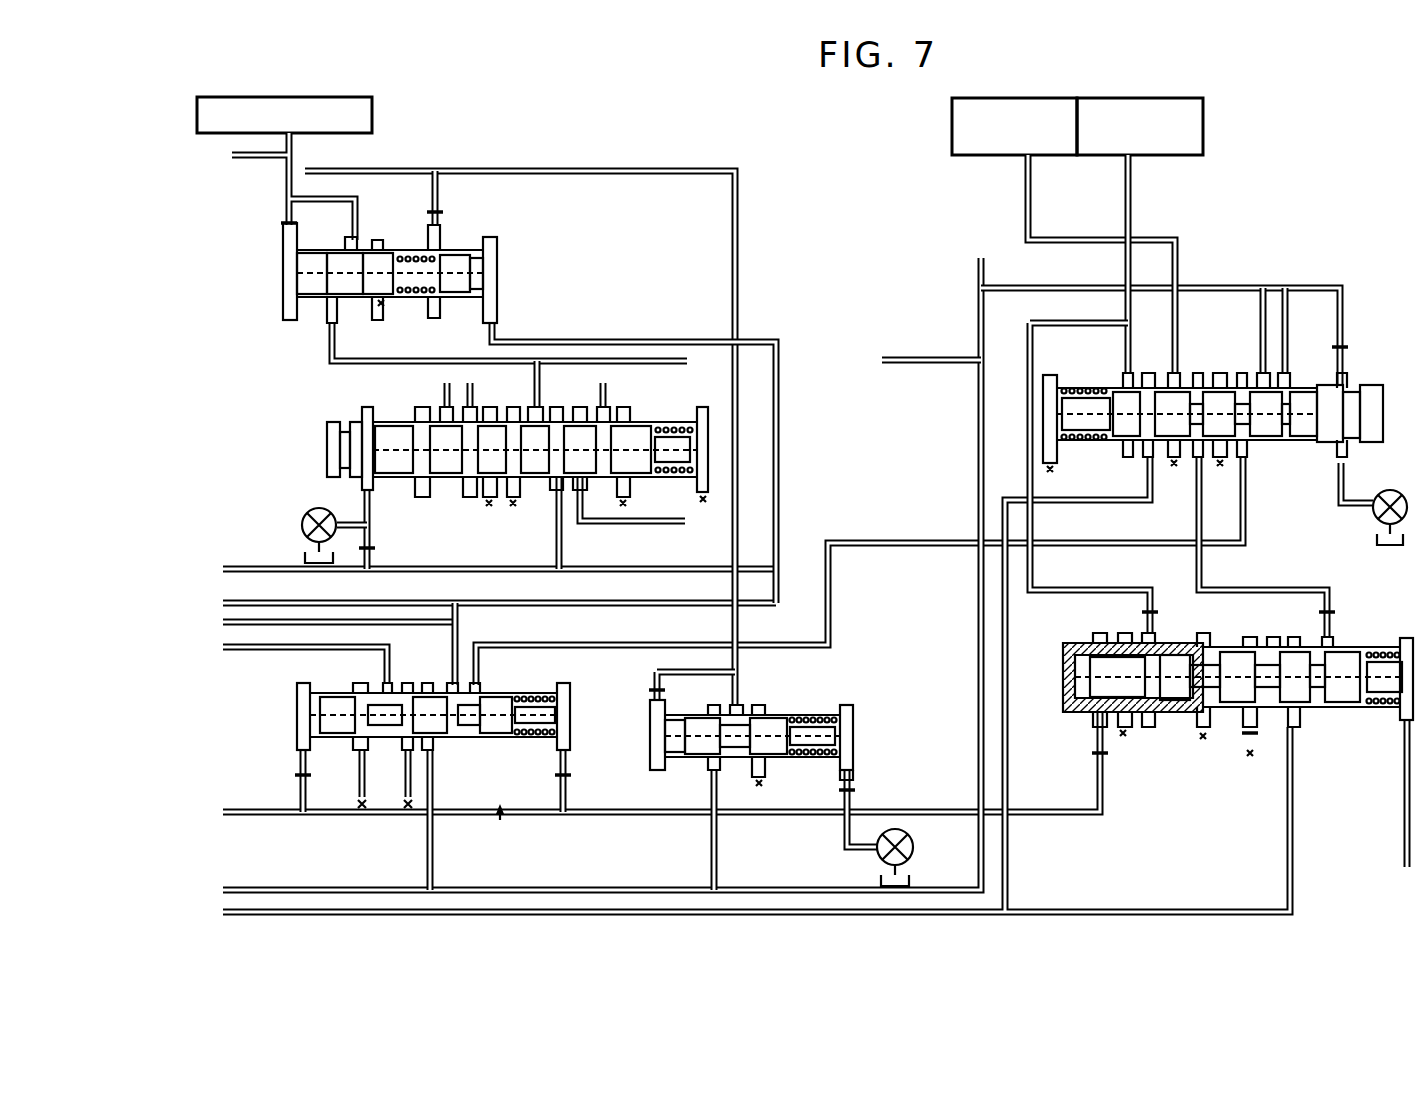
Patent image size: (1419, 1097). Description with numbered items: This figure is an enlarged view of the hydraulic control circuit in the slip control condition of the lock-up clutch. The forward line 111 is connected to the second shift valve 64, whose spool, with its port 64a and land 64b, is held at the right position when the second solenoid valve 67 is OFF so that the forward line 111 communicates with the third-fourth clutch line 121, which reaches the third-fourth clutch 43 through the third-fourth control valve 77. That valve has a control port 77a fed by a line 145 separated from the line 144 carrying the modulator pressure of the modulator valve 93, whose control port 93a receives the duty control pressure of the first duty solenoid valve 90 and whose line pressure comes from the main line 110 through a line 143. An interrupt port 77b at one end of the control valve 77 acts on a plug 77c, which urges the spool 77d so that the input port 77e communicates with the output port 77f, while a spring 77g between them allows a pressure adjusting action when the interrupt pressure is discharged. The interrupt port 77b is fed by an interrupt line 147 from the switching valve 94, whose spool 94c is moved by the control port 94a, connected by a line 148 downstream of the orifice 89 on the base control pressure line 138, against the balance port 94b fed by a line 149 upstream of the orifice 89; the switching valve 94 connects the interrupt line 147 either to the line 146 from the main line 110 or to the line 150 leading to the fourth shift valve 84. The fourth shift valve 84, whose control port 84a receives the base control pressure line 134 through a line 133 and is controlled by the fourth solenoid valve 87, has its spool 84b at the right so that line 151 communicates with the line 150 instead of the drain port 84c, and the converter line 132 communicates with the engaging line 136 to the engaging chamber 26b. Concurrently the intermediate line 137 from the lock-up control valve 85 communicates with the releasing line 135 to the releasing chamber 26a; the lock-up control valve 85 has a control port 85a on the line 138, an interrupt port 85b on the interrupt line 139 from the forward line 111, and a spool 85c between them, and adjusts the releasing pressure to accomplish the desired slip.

The 3-4 clutch 43 is at (372, 113).
The releasing chamber 26a is at (952, 137).
The engaging chamber 26b is at (1203, 132).
The 3-4 control valve 77 is at (395, 268).
The control port 77a is at (428, 235).
The interrupt port 77b is at (502, 312).
The plug 77c is at (492, 251).
The spool 77d is at (280, 250).
The input port 77e is at (326, 317).
The output port 77f is at (350, 242).
The spring 77g is at (402, 310).
The line 145 is at (438, 206).
The line 144 is at (738, 255).
The 3-4 clutch line 121 is at (333, 357).
The second shift valve 64 is at (527, 428).
The port of second shift valve 64a is at (375, 483).
The land of second shift valve 64b is at (413, 437).
The second solenoid valve 67 is at (302, 508).
The forward line 111 is at (556, 533).
The interrupt line 147 is at (800, 448).
The line 150 is at (568, 622).
The switching valve 94 is at (421, 726).
The control port 94a is at (568, 760).
The balance port 94b is at (294, 743).
The spool 94c is at (329, 691).
The line 149 is at (296, 793).
The line 148 is at (561, 791).
The line 146 is at (433, 858).
The orifice 89 is at (506, 821).
The main line 110 is at (602, 888).
The line 143 is at (710, 844).
The base control pressure line 138 is at (777, 814).
The modulator valve 93 is at (790, 722).
The control port 93a is at (854, 764).
The first duty solenoid valve 90 is at (913, 852).
The releasing line 135 is at (1025, 197).
The engaging line 136 is at (1131, 202).
The line 133 is at (976, 316).
The base control pressure line 134 is at (1314, 283).
The fourth shift valve 84 is at (1224, 410).
The control port 84a is at (1338, 446).
The spool 84b is at (1114, 438).
The drain port 84c is at (1208, 470).
The line 151 is at (1262, 332).
The converter line 132 is at (1070, 500).
The fourth solenoid valve 87 is at (1376, 525).
The intermediate line 137 is at (1203, 573).
The lock-up control valve 85 is at (1220, 730).
The control port 85a is at (1095, 723).
The interrupt port 85b is at (1402, 719).
The spool 85c is at (1180, 698).
The interrupt line 139 is at (1403, 830).